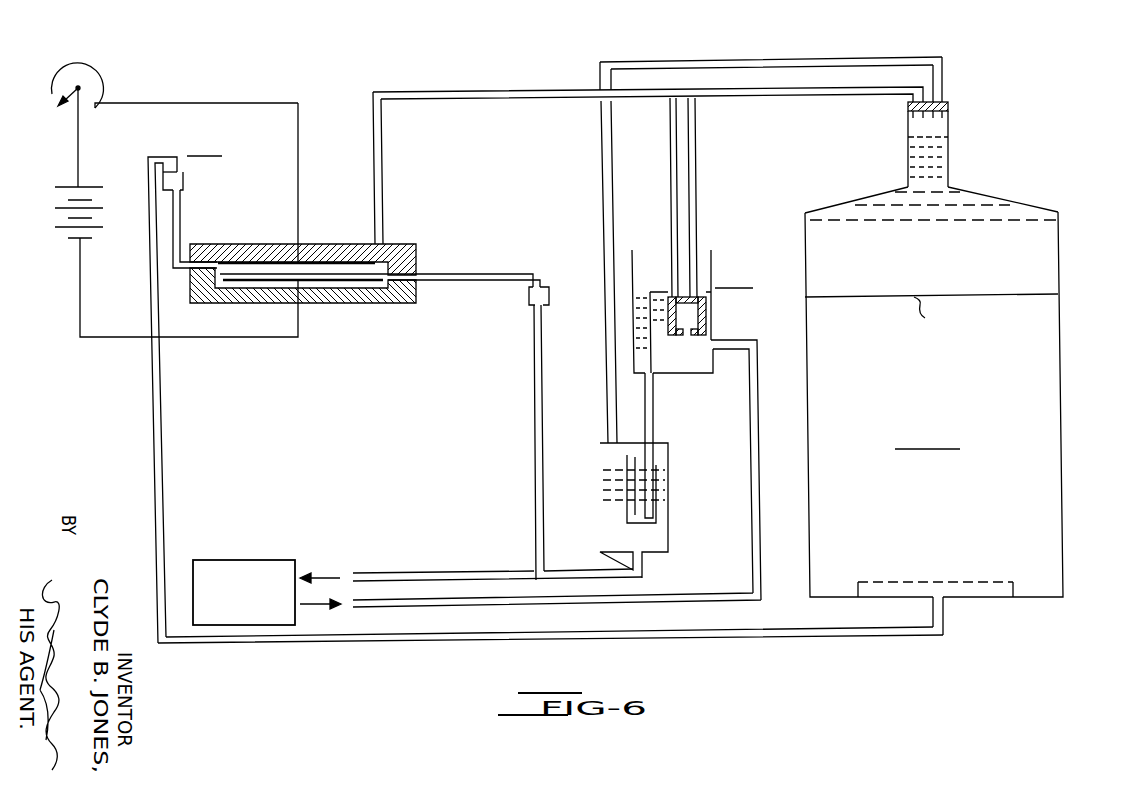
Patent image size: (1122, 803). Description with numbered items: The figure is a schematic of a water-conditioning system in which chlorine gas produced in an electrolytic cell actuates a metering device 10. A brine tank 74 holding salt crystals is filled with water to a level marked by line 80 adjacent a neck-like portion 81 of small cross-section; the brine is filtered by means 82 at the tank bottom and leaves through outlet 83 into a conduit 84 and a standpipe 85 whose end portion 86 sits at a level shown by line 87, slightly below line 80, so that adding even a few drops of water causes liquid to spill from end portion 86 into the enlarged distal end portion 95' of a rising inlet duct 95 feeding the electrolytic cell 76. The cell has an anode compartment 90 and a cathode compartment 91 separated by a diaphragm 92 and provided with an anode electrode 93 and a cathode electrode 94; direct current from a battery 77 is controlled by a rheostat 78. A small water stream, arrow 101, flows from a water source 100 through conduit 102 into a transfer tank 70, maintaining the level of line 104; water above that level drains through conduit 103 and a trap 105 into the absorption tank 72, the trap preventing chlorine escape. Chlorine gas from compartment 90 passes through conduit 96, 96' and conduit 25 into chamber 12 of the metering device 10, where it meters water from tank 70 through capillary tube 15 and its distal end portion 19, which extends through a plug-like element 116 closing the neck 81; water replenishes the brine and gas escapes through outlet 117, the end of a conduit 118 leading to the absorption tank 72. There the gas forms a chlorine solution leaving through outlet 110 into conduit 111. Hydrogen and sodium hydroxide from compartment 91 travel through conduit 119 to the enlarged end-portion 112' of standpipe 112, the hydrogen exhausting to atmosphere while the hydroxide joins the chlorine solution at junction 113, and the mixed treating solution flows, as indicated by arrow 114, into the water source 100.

The metering device 10 is at (665, 337).
The chamber 12 is at (708, 313).
The capillary tube 15 is at (783, 97).
The distal end portion 19 is at (920, 100).
The conduit 25 is at (670, 214).
The transfer tank 70 is at (712, 270).
The absorption tank 72 is at (670, 456).
The brine tank 74 is at (1065, 372).
The electrolytic cell 76 is at (248, 305).
The battery 77 is at (61, 210).
The rheostat 78 is at (95, 68).
The line 80 is at (950, 137).
The neck-like portion 81 is at (950, 170).
The filtering means 82 is at (961, 582).
The outlet 83 is at (945, 615).
The conduit 84 is at (488, 642).
The standpipe 85 is at (151, 398).
The end portion 86 is at (157, 155).
The line 87 is at (212, 155).
The anode compartment 90 is at (248, 268).
The cathode compartment 91 is at (321, 283).
The diaphragm 92 is at (322, 272).
The anode electrode 93 is at (267, 262).
The cathode electrode 94 is at (355, 283).
The inlet duct 95 is at (195, 229).
The enlarged distal end portion 95' is at (205, 176).
The conduit 96 is at (395, 168).
The conduit 96' is at (536, 81).
The water source 100 is at (214, 560).
The arrow 101 is at (326, 607).
The conduit 102 is at (756, 453).
The conduit 103 is at (656, 410).
The line 104 is at (734, 288).
The trap 105 is at (656, 502).
The outlet 110 is at (639, 568).
The conduit 111 is at (410, 572).
The standpipe 112 is at (515, 442).
The enlarged end-portion 112' is at (508, 299).
The junction 113 is at (524, 570).
The arrow 114 is at (329, 577).
The plug-like element 116 is at (945, 104).
The outlet 117 is at (943, 72).
The conduit 118 is at (789, 60).
The conduit 119 is at (501, 272).